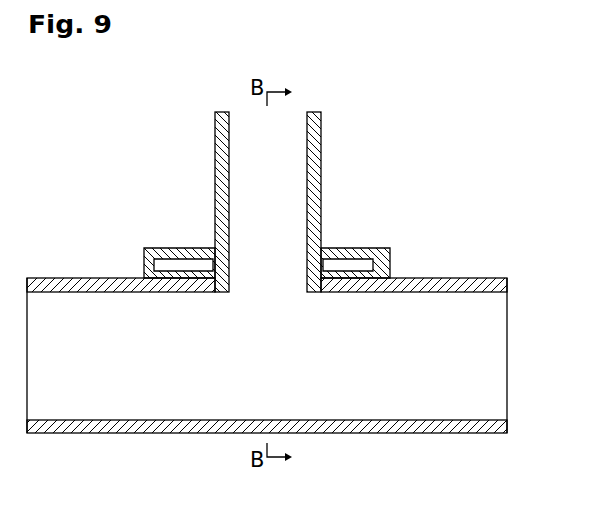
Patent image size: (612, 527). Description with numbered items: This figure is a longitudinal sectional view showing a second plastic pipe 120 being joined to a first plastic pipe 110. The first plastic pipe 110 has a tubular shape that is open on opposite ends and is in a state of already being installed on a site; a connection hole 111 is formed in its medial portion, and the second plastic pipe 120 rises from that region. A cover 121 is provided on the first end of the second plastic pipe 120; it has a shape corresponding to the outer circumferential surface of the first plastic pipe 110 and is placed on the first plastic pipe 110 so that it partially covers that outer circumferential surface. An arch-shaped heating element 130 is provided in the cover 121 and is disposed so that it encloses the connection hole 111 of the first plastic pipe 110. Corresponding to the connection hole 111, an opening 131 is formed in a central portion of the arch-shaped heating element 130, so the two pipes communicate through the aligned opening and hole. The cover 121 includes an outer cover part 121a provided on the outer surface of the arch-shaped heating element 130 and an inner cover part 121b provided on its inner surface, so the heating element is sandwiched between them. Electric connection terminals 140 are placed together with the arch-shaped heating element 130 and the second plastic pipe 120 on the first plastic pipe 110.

The first plastic pipe 110 is at (137, 433).
The connection hole 111 is at (267, 287).
The second plastic pipe 120 is at (320, 148).
The cover 121 is at (497, 210).
The outer cover part 121a is at (372, 248).
The inner cover part 121b is at (372, 264).
The arch-shaped heating element 130 is at (194, 268).
The opening 131 is at (270, 265).
The electric connection terminals 140 is at (162, 264).